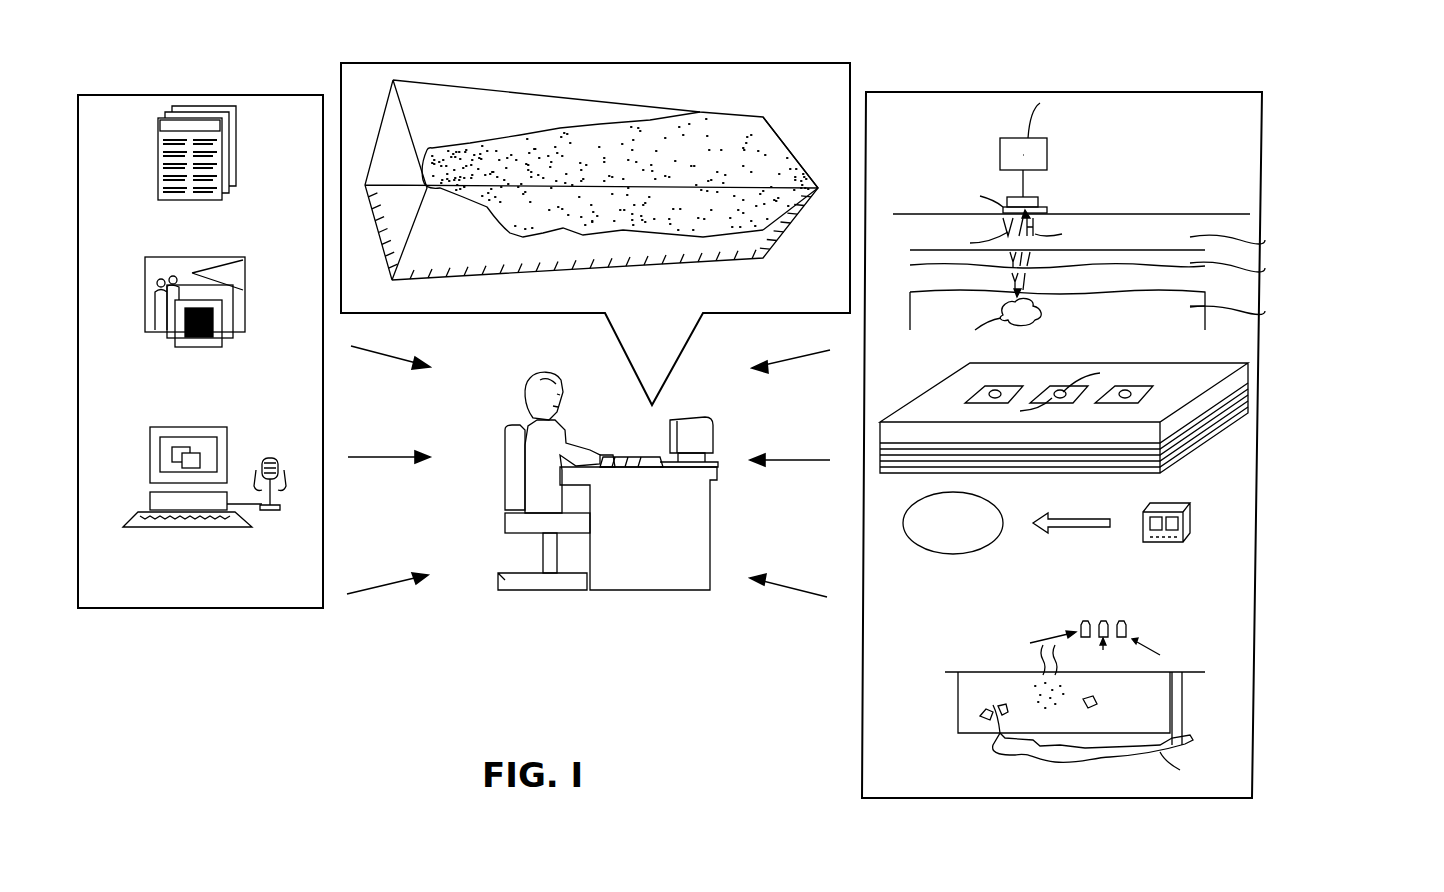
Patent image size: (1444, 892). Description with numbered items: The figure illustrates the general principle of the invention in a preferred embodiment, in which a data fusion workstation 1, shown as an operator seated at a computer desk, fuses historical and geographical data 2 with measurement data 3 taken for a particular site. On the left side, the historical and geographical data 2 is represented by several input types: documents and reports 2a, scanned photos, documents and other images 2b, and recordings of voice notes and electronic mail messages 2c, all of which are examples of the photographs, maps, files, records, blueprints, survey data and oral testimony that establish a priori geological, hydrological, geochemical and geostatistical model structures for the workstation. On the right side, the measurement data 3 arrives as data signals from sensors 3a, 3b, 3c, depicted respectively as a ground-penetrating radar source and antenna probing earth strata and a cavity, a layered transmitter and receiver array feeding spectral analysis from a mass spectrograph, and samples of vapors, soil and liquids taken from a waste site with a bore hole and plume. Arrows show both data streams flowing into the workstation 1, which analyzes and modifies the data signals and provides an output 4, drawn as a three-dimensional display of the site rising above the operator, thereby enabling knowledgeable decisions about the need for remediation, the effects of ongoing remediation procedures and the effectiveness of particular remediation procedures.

The data fusion workstation 1 is at (628, 603).
The historical and geographical data 2 is at (218, 389).
The historical and geographical data (documents and reports) 2a is at (245, 158).
The historical and geographical data (scanned photos and images) 2b is at (250, 290).
The historical and geographical data (voice notes and electronic mail) 2c is at (250, 437).
The measurement data 3 is at (1121, 472).
The sensor 3a is at (965, 172).
The sensor 3b is at (948, 373).
The sensor 3c is at (960, 623).
The output 4 is at (780, 63).